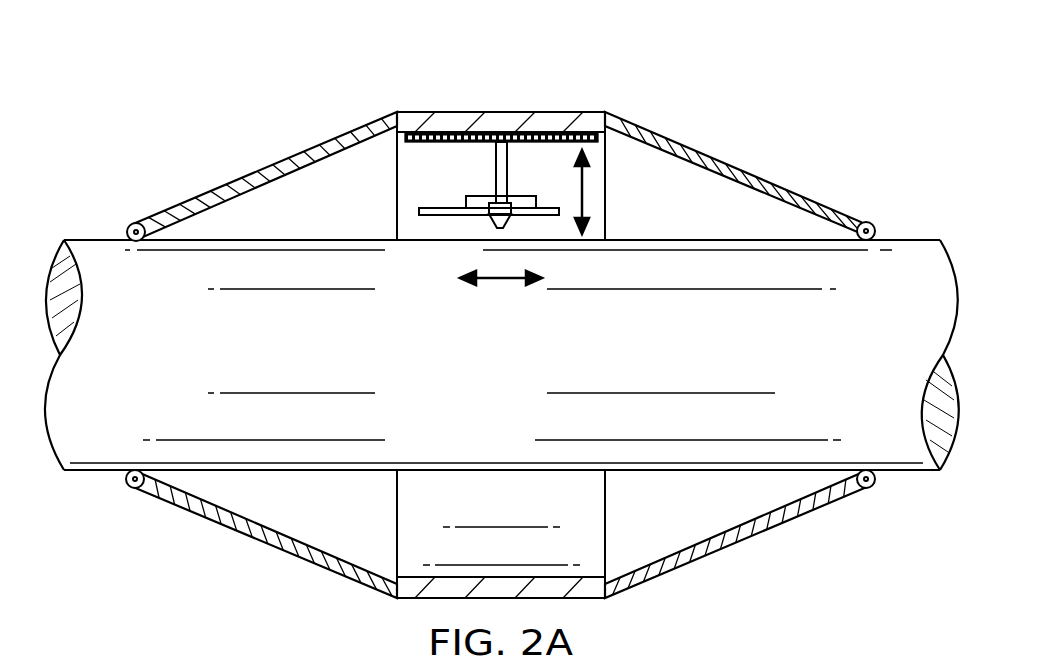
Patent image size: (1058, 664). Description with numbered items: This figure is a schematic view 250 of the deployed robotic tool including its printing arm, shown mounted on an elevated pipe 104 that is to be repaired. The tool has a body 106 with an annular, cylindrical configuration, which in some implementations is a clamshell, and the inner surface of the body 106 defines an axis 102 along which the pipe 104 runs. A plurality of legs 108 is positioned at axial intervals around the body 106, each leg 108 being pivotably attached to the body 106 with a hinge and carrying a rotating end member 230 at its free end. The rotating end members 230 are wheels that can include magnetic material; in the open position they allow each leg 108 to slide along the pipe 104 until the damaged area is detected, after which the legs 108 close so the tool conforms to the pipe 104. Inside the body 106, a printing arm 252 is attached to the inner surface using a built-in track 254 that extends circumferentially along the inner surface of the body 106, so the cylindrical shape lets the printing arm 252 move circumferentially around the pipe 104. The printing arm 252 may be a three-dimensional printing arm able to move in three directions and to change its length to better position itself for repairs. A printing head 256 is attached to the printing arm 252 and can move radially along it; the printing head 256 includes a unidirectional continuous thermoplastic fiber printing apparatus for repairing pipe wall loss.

The schematic view 250 is at (351, 72).
The axis 102 is at (285, 144).
The pipe 104 is at (898, 472).
The body 106 is at (553, 112).
The leg 108 is at (753, 173).
The rotating end member 230 is at (877, 228).
The printing arm 252 is at (496, 170).
The track 254 is at (596, 142).
The printing head 256 is at (480, 230).